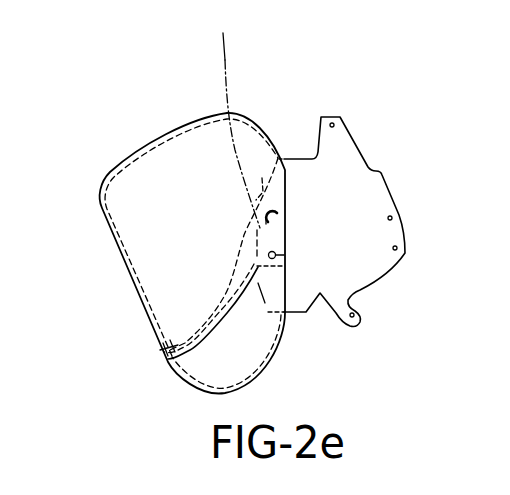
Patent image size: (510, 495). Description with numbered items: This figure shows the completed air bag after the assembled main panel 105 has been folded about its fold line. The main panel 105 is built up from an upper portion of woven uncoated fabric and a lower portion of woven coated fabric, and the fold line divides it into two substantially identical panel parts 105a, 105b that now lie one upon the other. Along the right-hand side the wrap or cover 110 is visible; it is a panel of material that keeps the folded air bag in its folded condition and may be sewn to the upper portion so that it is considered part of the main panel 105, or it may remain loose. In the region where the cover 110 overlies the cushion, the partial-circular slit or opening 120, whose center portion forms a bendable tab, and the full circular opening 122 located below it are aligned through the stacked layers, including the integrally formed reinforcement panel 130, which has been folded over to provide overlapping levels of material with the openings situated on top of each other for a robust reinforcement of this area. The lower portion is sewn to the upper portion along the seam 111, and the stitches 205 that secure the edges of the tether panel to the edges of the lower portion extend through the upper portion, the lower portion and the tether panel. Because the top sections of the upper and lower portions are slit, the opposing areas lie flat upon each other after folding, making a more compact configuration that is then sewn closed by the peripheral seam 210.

The main panel 105 is at (168, 235).
The panel part 105a is at (160, 157).
The panel part 105b is at (132, 298).
The wrap or cover 110 is at (325, 152).
The seam 111 is at (160, 347).
The partial-circular slit or opening 120 is at (280, 208).
The full circular opening 122 is at (284, 255).
The reinforcement panel 130 is at (235, 115).
The stitches 205 is at (190, 332).
The peripheral seam 210 is at (112, 170).